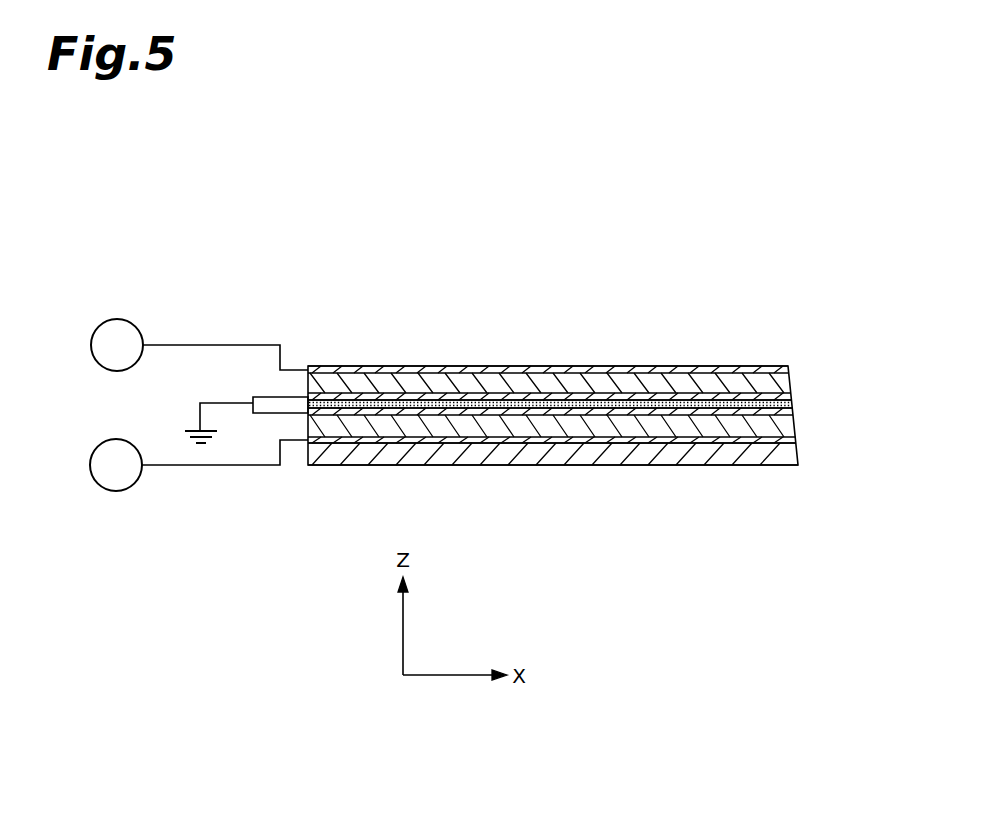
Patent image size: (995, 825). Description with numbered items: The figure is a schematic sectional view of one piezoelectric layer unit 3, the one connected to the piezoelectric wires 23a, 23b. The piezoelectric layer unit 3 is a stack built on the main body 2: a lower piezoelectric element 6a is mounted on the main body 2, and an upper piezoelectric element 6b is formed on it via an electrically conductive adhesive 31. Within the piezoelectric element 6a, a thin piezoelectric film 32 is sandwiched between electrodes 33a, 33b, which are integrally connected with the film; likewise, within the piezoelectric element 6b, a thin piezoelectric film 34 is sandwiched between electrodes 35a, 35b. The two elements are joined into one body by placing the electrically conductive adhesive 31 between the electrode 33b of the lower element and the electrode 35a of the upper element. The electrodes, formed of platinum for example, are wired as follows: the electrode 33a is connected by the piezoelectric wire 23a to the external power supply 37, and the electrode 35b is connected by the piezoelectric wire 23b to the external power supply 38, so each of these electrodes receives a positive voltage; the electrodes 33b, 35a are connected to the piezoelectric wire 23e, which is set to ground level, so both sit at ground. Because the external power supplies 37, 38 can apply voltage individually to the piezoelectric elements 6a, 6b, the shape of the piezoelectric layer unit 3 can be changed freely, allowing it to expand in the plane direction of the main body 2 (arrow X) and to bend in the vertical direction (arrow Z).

The main body 2 is at (795, 452).
The piezoelectric layer unit 3 is at (800, 312).
The piezoelectric element 6a is at (735, 519).
The piezoelectric element 6b is at (737, 287).
The piezoelectric wire 23a is at (210, 465).
The piezoelectric wire 23b is at (230, 345).
The piezoelectric wire 23e is at (200, 397).
The electrically conductive adhesive 31 is at (790, 405).
The piezoelectric film 32 is at (650, 427).
The electrode 33a is at (718, 438).
The electrode 33b is at (595, 411).
The piezoelectric film 34 is at (645, 383).
The electrode 35a is at (683, 393).
The electrode 35b is at (598, 366).
The external power supply 37 is at (93, 478).
The external power supply 38 is at (96, 329).